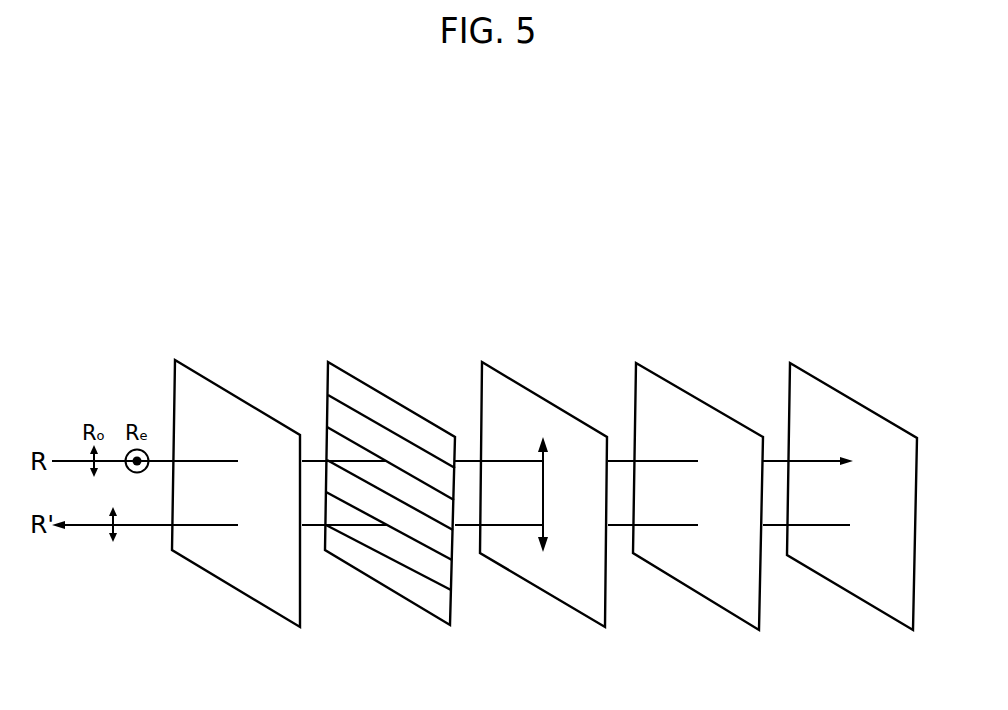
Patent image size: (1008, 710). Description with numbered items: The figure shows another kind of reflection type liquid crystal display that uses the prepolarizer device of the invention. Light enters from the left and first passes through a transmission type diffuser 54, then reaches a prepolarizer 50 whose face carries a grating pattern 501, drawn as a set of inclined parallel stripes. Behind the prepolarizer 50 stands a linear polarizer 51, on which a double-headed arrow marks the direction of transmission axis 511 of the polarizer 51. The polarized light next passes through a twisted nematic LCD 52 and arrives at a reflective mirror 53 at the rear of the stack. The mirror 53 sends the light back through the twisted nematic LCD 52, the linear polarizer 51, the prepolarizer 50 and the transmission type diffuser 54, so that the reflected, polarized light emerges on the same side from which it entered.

The prepolarizer 50 is at (397, 400).
The grating pattern of the prepolarizer 501 is at (385, 557).
The linear polarizer 51 is at (552, 402).
The direction of transmission axis of the polarizer 511 is at (537, 523).
The twisted nematic LCD 52 is at (705, 402).
The reflective mirror 53 is at (860, 402).
The transmission type diffuser 54 is at (243, 400).